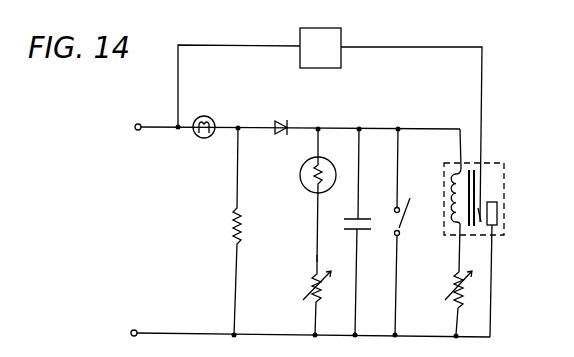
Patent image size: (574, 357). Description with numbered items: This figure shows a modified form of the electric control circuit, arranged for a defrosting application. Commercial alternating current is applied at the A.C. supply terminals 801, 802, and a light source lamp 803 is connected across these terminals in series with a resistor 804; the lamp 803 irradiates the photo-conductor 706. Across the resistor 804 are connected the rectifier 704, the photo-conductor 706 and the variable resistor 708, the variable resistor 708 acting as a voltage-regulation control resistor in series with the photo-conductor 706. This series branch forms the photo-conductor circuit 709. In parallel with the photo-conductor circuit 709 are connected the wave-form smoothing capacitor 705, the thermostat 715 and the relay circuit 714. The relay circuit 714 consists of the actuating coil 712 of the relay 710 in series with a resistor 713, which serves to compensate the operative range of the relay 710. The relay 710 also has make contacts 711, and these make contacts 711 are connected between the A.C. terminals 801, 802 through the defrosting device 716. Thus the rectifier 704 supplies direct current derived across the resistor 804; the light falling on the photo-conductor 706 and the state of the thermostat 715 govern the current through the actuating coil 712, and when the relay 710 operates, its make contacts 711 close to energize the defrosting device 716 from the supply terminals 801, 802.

The A.C. supply terminal 801 is at (118, 129).
The A.C. supply terminal 802 is at (109, 334).
The light source lamp 803 is at (208, 116).
The resistor 804 is at (230, 228).
The rectifier 704 is at (283, 119).
The photo-conductor 706 is at (302, 166).
The photo-conductor circuit 709 is at (315, 262).
The variable resistor 708 is at (309, 290).
The wave-form smoothing capacitor 705 is at (362, 233).
The thermostat 715 is at (416, 232).
The defrosting device 716 is at (335, 56).
The relay 710 is at (477, 232).
The actuating coil 712 is at (458, 181).
The make contacts 711 is at (488, 202).
The relay circuit 714 is at (458, 257).
The resistor 713 is at (451, 292).